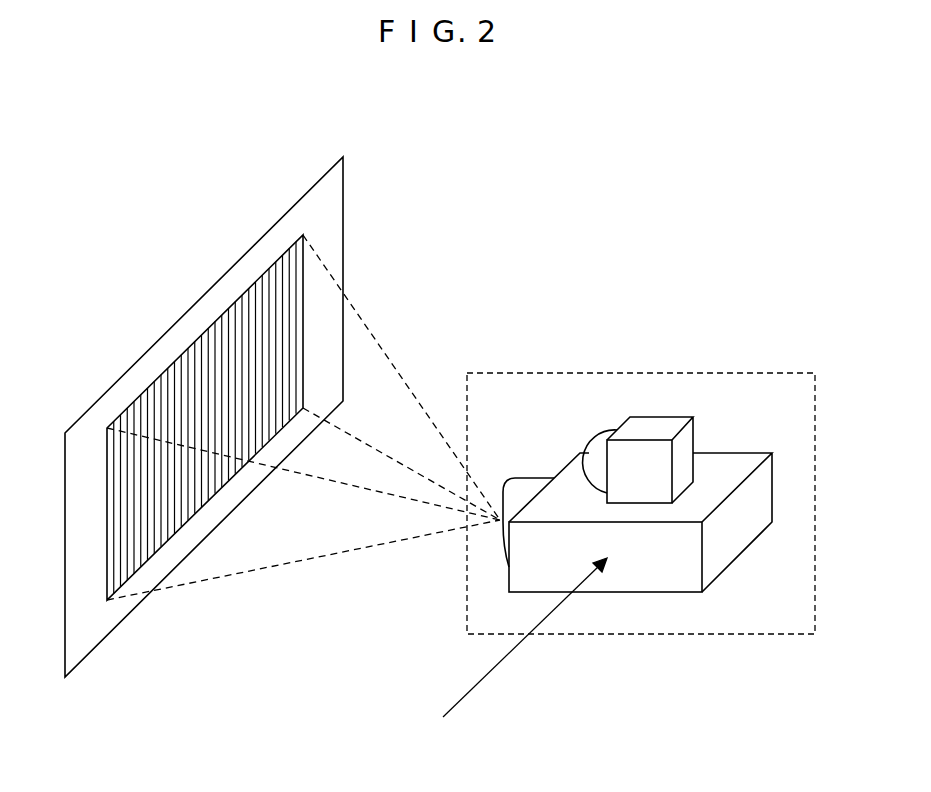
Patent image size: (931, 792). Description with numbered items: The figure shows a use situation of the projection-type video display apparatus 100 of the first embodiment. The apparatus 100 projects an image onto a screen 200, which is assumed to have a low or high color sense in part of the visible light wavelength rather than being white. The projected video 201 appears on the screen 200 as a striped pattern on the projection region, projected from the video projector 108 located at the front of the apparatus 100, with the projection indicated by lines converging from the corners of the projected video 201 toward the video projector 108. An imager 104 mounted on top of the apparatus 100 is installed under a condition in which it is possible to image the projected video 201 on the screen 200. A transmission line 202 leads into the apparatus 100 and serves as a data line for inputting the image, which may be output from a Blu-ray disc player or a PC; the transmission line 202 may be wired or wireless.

The projection-type video display apparatus 100 is at (598, 372).
The imager 104 is at (697, 428).
The video projector 108 is at (502, 541).
The screen 200 is at (115, 383).
The projected video 201 is at (247, 290).
The transmission line 202 is at (493, 669).